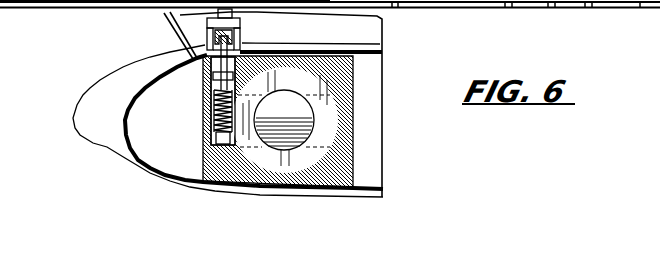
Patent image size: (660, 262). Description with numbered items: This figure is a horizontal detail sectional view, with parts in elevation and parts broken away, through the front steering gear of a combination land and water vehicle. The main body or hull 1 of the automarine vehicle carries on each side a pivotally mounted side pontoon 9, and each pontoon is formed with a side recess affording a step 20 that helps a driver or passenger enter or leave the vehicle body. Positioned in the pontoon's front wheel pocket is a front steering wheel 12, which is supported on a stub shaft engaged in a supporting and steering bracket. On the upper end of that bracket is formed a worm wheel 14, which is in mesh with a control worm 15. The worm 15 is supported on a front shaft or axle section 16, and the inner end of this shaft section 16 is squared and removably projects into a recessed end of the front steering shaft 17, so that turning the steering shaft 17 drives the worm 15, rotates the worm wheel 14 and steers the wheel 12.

The main body or hull 1 is at (173, 29).
The side pontoon 9 is at (107, 141).
The front steering wheel 12 is at (357, 143).
The worm wheel 14 is at (250, 95).
The control worm 15 is at (205, 131).
The front shaft or axle section 16 is at (205, 74).
The front steering shaft 17 is at (250, 10).
The step 20 is at (459, 7).